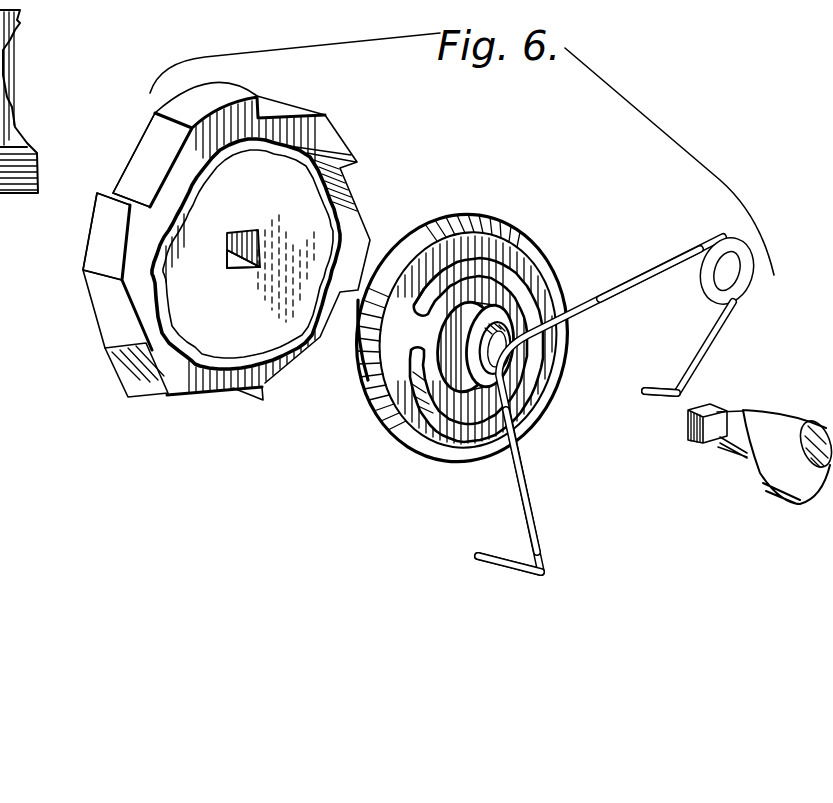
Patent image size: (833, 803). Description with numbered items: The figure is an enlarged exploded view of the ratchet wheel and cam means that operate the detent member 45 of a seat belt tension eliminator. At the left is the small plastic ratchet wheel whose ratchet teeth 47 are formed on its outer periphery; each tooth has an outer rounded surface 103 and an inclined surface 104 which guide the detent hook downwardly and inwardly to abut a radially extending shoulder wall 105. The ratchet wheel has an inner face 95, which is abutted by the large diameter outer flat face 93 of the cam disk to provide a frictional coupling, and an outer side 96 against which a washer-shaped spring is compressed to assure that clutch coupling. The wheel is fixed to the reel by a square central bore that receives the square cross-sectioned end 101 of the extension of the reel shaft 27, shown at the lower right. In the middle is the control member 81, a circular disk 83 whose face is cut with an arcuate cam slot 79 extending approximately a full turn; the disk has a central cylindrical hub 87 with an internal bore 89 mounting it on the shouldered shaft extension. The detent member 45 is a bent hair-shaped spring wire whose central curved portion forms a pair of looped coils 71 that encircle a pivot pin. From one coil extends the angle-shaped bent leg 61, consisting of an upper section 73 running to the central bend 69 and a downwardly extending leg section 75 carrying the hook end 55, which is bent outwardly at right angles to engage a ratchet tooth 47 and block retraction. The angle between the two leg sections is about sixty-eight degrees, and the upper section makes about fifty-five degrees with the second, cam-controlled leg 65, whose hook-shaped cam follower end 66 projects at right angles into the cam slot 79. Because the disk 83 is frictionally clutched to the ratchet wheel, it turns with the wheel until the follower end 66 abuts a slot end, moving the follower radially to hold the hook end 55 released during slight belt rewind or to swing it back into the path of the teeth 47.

The ratchet teeth 47 is at (262, 83).
The outer rounded surfaces 103 is at (97, 240).
The inclined surfaces 104 is at (120, 308).
The radially extending shoulder wall 105 is at (112, 350).
The inner face 95 is at (237, 232).
The outer side 96 is at (288, 227).
The cam slot 79 is at (503, 268).
The control member 81 is at (503, 243).
The circular disk 83 is at (403, 310).
The central cylindrical hub 87 is at (418, 305).
The internal bore 89 is at (537, 306).
The central bend 69 is at (515, 352).
The outer flat face 93 is at (357, 370).
The bent leg 61 is at (651, 260).
The upper section 73 is at (617, 284).
The leg section 75 is at (524, 478).
The hook end 55 is at (507, 567).
The looped coils 71 is at (727, 235).
The detent member 45 is at (711, 291).
The cam-controlled leg 65 is at (714, 338).
The cam follower end 66 is at (655, 383).
The reel shaft 27 is at (785, 480).
The square cross-sectioned end 101 is at (690, 443).